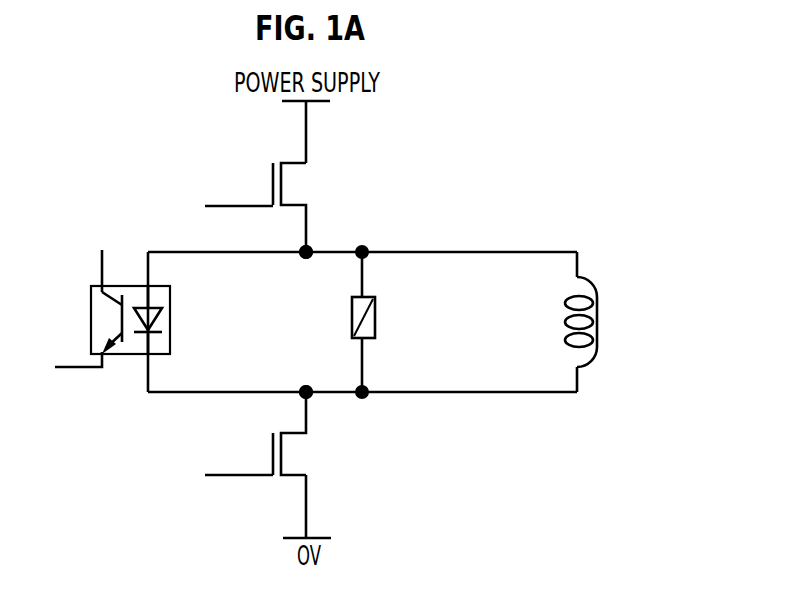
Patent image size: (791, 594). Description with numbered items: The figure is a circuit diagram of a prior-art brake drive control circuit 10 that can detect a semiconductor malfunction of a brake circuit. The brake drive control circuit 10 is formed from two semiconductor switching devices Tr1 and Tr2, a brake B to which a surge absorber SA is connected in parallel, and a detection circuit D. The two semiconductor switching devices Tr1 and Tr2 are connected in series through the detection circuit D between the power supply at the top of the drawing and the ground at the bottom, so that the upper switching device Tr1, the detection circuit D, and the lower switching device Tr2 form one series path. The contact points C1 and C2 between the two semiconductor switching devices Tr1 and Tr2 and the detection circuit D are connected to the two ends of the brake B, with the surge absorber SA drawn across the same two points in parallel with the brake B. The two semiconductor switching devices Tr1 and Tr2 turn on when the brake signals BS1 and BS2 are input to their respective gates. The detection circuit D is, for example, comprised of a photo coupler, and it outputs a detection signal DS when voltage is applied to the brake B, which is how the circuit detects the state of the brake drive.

The brake drive control circuit 10 is at (527, 196).
The semiconductor switching device Tr1 is at (312, 207).
The semiconductor switching device Tr2 is at (312, 433).
The brake signal BS1 is at (239, 188).
The brake signal BS2 is at (239, 459).
The contact point C1 is at (312, 248).
The contact point C2 is at (311, 396).
The surge absorber SA is at (376, 316).
The brake B is at (597, 322).
The detection circuit D is at (141, 320).
The detection signal DS is at (74, 317).